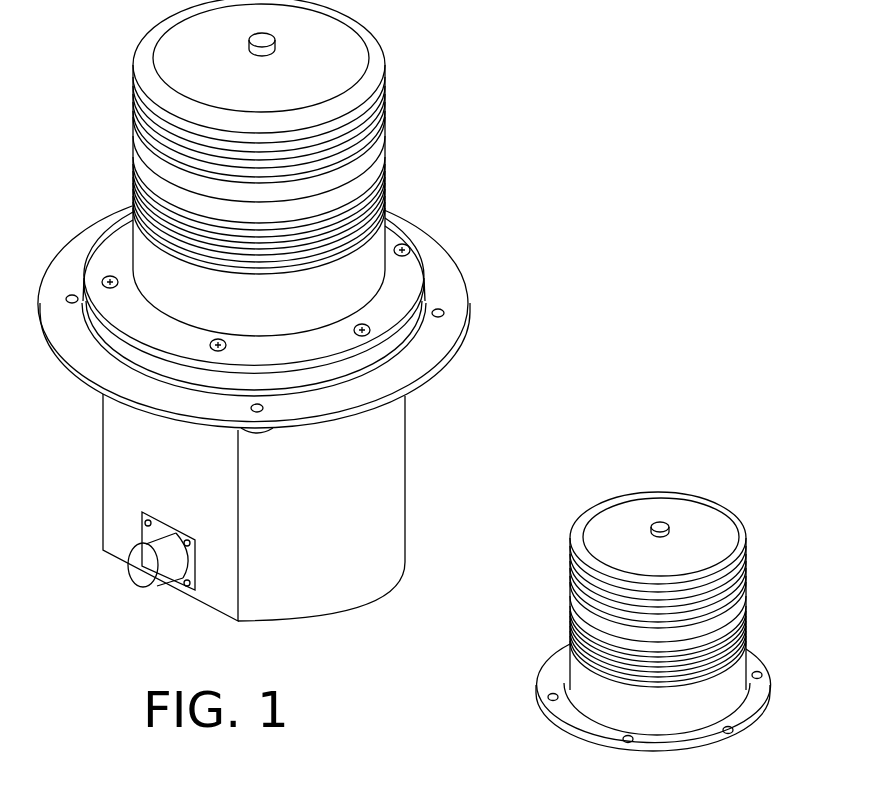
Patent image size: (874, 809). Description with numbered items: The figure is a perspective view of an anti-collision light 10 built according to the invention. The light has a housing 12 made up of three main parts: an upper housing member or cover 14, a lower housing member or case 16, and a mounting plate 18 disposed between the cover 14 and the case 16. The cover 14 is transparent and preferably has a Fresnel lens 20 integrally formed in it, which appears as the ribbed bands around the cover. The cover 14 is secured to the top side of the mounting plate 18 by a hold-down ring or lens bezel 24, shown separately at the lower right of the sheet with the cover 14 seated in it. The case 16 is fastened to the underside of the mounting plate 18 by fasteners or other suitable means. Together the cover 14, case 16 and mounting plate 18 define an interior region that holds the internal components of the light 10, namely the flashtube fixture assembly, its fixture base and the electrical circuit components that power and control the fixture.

The anti-collision light 10 is at (608, 142).
The housing 12 is at (395, 219).
The cover 14 is at (386, 98).
The case 16 is at (385, 496).
The mounting plate 18 is at (468, 334).
The Fresnel lens 20 is at (385, 145).
The lens bezel 24 is at (763, 700).